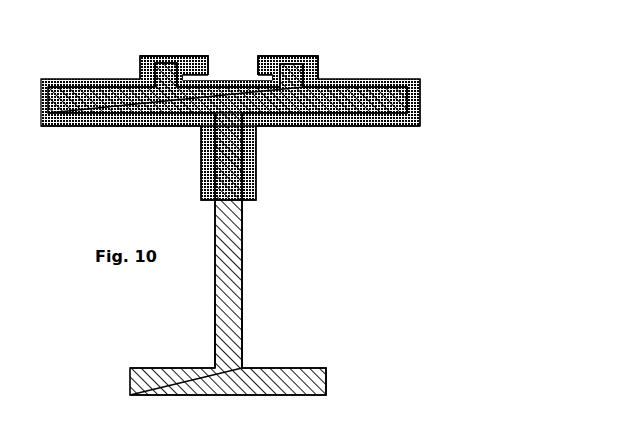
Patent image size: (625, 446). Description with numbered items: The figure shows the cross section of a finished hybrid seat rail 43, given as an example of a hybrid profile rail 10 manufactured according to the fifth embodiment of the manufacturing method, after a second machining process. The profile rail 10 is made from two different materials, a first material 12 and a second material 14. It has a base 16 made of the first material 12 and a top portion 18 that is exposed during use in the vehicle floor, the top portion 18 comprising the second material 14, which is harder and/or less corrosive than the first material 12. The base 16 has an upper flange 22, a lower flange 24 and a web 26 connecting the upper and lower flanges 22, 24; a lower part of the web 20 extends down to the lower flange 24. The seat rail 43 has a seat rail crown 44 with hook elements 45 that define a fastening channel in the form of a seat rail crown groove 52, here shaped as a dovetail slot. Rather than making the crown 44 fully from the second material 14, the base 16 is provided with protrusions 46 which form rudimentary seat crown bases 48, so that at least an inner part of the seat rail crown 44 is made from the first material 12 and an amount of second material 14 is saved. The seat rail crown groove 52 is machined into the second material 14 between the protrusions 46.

The profile rail 10 is at (277, 284).
The first material 12 is at (107, 123).
The second material 14 is at (415, 125).
The base 16 is at (242, 232).
The top portion 18 is at (452, 99).
The web lower portion 20 is at (215, 330).
The upper flange 22 is at (347, 123).
The lower flange 24 is at (327, 383).
The web 26 is at (215, 268).
The hybrid seat rail 43 is at (370, 216).
The seat rail crown 44 is at (174, 38).
The hook elements 45 is at (273, 58).
The protrusions 46 is at (318, 70).
The rudimentary seat crown bases 48 is at (188, 68).
The seat rail crown groove 52 is at (244, 72).